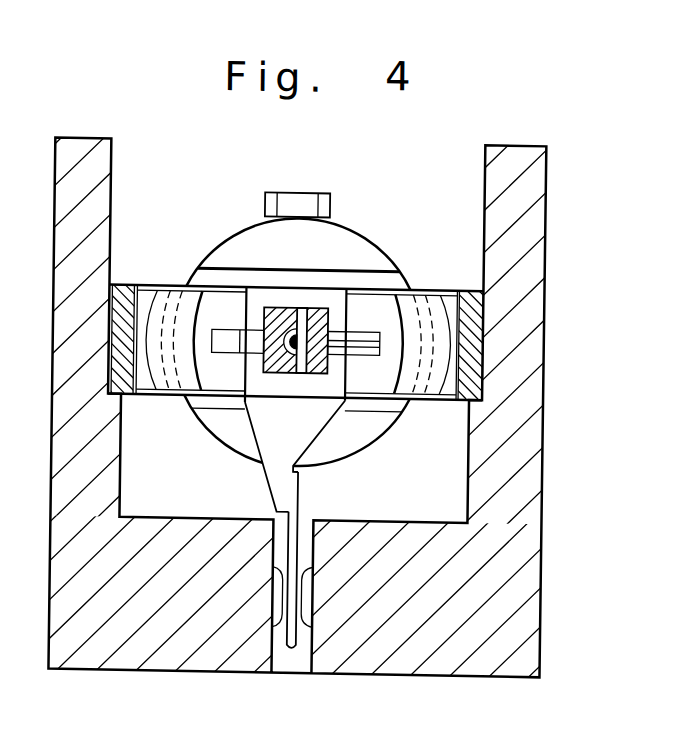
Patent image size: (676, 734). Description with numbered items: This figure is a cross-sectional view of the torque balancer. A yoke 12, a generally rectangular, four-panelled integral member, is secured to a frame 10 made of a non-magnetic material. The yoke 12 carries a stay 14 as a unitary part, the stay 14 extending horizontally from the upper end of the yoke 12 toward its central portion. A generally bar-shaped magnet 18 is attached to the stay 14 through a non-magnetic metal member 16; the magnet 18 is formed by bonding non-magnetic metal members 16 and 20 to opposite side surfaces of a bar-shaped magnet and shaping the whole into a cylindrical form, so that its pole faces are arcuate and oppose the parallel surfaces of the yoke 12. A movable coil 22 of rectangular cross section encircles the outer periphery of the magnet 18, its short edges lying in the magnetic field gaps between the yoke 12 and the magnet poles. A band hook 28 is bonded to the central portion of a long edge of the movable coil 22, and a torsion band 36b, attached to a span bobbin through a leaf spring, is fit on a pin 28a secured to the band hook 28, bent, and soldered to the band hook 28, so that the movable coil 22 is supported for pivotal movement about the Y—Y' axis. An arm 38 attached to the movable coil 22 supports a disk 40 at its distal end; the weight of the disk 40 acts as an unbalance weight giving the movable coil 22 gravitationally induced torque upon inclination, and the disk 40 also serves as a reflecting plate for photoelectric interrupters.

The frame 10 is at (546, 260).
The yoke 12 is at (120, 288).
The stay 14 is at (304, 193).
The non-magnetic metal member 16 is at (375, 248).
The magnet 18 is at (410, 291).
The non-magnetic metal member 20 is at (376, 424).
The movable coil 22 is at (165, 391).
The band hook 28 is at (317, 308).
The pin 28a is at (299, 308).
The torsion band 36b is at (341, 355).
The arm 38 is at (267, 483).
The disk 40 is at (294, 648).